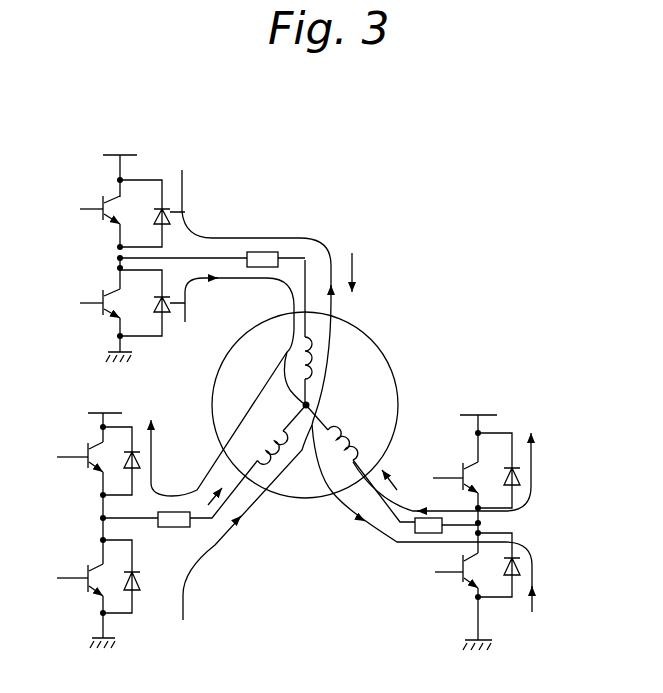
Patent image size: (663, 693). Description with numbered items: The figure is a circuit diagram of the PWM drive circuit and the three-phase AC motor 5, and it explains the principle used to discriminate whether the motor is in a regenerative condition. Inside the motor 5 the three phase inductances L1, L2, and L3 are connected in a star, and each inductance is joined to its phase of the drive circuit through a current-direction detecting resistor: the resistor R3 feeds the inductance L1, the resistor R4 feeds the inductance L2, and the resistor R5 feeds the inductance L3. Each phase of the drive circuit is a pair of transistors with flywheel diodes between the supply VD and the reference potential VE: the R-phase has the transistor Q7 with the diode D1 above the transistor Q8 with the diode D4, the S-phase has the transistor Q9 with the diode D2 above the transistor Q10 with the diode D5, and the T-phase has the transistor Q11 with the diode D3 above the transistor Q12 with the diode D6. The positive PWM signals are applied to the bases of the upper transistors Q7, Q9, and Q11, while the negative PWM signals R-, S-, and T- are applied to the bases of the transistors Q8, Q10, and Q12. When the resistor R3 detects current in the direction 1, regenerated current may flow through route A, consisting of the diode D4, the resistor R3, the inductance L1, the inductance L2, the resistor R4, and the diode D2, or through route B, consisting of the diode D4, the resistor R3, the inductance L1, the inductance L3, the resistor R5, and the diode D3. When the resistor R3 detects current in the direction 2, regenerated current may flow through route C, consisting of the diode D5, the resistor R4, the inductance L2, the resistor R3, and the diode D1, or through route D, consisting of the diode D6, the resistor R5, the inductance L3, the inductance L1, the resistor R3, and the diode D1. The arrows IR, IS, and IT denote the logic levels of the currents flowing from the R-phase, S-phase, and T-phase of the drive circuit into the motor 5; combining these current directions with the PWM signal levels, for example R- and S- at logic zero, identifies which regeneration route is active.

The AC motor 5 is at (380, 350).
The inductance L1 is at (315, 360).
The inductance L2 is at (265, 436).
The inductance L3 is at (349, 433).
The current direction 1 is at (245, 341).
The current direction 2 is at (256, 297).
The route A is at (158, 432).
The route B is at (533, 452).
The route C is at (225, 540).
The route D is at (352, 515).
The R-phase current logic level IR is at (365, 273).
The S-phase current logic level IS is at (223, 480).
The T-phase current logic level IT is at (395, 470).
The supply voltage VD is at (292, 282).
The reference voltage VE (ground) VE is at (306, 508).
The PWM signal R- is at (74, 300).
The PWM signal S- is at (62, 577).
The PWM signal T- is at (442, 566).
The transistor Q7 is at (113, 212).
The transistor Q8 is at (113, 305).
The transistor Q9 is at (93, 477).
The transistor Q10 is at (93, 600).
The transistor Q11 is at (467, 456).
The transistor Q12 is at (472, 590).
The diode D1 is at (170, 215).
The diode D2 is at (142, 460).
The diode D3 is at (521, 476).
The diode D4 is at (170, 304).
The diode D5 is at (142, 580).
The diode D6 is at (521, 565).
The resistor R3 is at (272, 252).
The resistor R4 is at (178, 527).
The resistor R5 is at (422, 534).